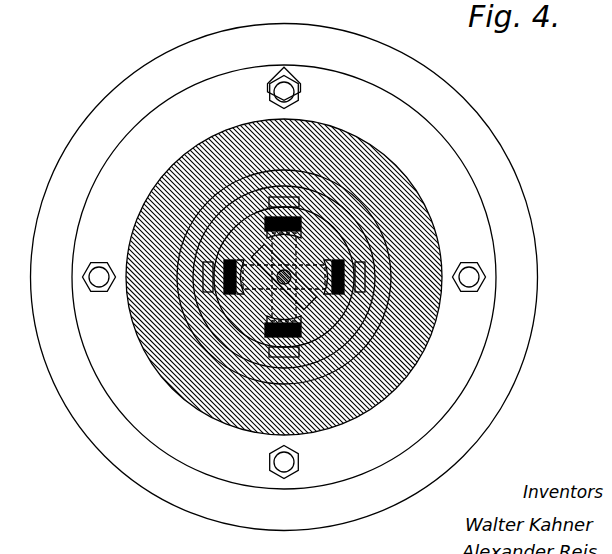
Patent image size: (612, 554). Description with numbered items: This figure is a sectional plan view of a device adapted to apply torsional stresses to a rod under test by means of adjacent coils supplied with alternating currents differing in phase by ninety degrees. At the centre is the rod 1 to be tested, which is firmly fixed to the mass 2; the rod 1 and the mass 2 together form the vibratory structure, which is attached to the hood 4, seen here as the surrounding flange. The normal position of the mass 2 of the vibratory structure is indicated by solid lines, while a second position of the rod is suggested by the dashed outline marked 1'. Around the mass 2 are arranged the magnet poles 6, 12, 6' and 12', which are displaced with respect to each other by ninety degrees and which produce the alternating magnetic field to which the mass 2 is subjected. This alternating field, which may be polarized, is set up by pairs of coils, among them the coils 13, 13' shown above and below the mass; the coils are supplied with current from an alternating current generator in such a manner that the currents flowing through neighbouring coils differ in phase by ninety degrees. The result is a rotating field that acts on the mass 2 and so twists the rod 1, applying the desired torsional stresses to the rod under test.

The rod 1 is at (291, 277).
The pole bands 1' is at (281, 277).
The mass 2 is at (296, 271).
The hood 4 is at (374, 161).
The magnet pole 6 is at (329, 287).
The magnet pole 6' is at (242, 266).
The magnet pole 12 is at (296, 238).
The magnet pole 12' is at (298, 321).
The coil 13 is at (298, 214).
The coil 13' is at (302, 341).